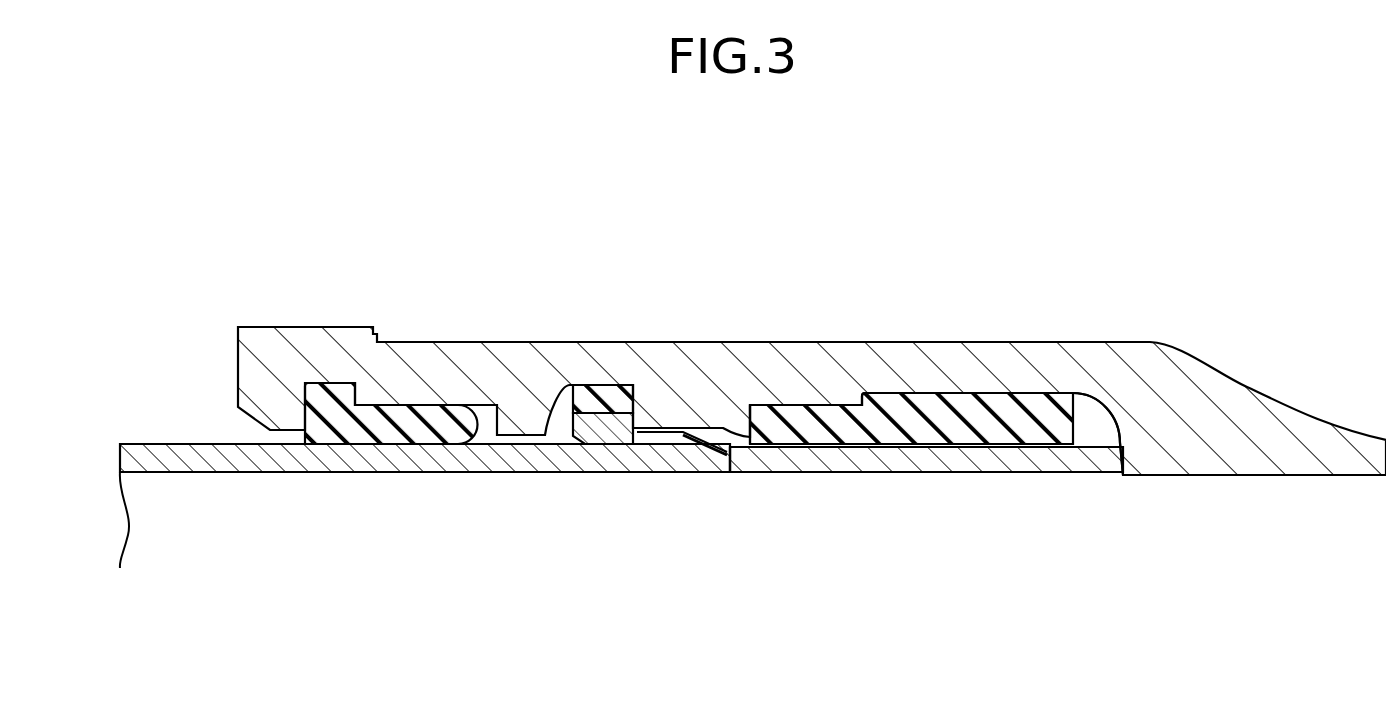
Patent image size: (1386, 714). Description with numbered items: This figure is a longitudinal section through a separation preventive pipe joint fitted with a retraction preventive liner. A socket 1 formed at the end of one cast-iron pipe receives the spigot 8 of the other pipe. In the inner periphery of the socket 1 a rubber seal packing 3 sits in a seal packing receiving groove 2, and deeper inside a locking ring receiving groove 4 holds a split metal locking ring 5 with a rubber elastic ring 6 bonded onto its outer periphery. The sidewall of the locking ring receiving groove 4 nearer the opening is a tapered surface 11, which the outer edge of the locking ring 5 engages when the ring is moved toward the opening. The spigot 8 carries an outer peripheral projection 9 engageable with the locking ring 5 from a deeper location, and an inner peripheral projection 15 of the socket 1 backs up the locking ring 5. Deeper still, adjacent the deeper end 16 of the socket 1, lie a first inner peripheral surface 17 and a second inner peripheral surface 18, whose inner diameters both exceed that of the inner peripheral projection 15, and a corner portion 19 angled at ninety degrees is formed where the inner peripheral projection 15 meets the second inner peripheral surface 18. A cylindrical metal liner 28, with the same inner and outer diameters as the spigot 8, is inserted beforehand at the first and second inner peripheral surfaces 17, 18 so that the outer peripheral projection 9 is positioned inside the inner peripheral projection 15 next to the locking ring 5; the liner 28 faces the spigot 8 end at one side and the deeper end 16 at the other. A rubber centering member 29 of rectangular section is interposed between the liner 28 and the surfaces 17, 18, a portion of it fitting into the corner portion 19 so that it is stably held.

The socket 1 is at (536, 338).
The seal packing receiving groove 2 is at (410, 472).
The seal packing 3 is at (432, 420).
The locking ring receiving groove 4 is at (612, 420).
The locking ring 5 is at (655, 432).
The elastic ring 6 is at (616, 384).
The spigot 8 is at (455, 488).
The outer peripheral projection 9 is at (719, 420).
The tapered surface 11 is at (557, 445).
The inner peripheral projection 15 is at (719, 420).
The deeper end 16 is at (1100, 445).
The first inner peripheral surface 17 is at (966, 430).
The second inner peripheral surface 18 is at (818, 442).
The corner portion 19 is at (766, 424).
The liner 28 is at (925, 466).
The centering member 29 is at (958, 397).